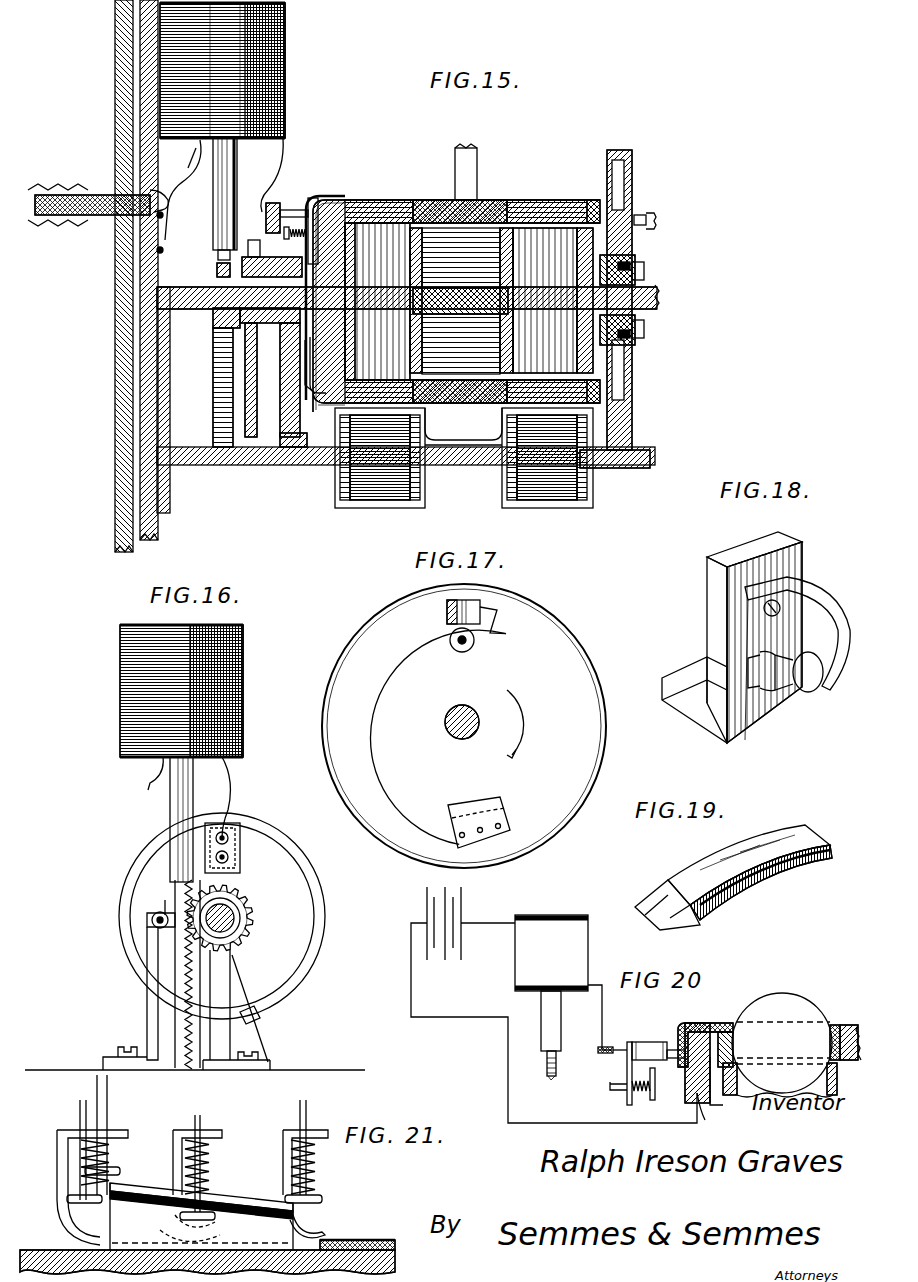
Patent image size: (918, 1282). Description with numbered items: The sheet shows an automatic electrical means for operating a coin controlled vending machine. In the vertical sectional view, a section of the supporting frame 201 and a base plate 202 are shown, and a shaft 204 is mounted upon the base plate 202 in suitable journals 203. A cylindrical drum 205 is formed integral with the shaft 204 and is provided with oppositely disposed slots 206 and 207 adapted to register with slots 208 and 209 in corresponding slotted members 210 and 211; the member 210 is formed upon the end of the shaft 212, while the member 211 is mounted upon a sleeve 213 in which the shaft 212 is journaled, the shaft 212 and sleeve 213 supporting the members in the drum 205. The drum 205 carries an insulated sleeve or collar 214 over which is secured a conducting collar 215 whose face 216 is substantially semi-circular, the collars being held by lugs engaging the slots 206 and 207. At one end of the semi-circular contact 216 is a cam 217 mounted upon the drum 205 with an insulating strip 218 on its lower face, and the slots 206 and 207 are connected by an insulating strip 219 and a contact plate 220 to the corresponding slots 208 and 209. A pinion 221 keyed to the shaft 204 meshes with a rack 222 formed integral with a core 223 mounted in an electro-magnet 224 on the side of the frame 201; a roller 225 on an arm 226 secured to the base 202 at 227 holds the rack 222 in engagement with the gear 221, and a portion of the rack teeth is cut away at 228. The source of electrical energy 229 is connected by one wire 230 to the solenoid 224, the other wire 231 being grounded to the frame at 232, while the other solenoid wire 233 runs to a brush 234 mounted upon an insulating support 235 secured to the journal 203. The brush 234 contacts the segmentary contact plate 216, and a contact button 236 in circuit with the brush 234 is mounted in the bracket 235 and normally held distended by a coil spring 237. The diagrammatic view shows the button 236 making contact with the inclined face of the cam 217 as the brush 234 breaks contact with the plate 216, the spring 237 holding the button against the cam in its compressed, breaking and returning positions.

In FIG. 15, the supporting frame 201 is at (135, 62).
In FIG. 15, the base plate 202 is at (225, 468).
In FIG. 16, the base plate 202 is at (45, 1068).
In FIG. 15, the journals 203 is at (305, 378).
In FIG. 16, the journals 203 is at (252, 1000).
In FIG. 15, the shaft 204 is at (190, 312).
In FIG. 16, the shaft 204 is at (232, 915).
In FIG. 17, the shaft 204 is at (458, 735).
In FIG. 15, the cylindrical drum 205 is at (378, 200).
In FIG. 16, the cylindrical drum 205 is at (300, 895).
In FIG. 17, the cylindrical drum 205 is at (565, 732).
In FIG. 21, the cylindrical drum 205 is at (45, 1250).
In FIG. 15, the slot 206 is at (395, 200).
In FIG. 20, the slot 206 is at (790, 1000).
In FIG. 15, the slot 207 is at (600, 200).
In FIG. 15, the slot 208 is at (400, 205).
In FIG. 15, the slot 209 is at (560, 205).
In FIG. 15, the slotted member 210 is at (418, 338).
In FIG. 20, the slotted member 210 is at (822, 1090).
In FIG. 15, the slotted member 211 is at (508, 348).
In FIG. 15, the shaft 212 is at (442, 314).
In FIG. 15, the sleeve 213 is at (548, 320).
In FIG. 20, the insulated sleeve 214 is at (735, 1040).
In FIG. 21, the insulated sleeve 214 is at (395, 1250).
In FIG. 15, the conducting collar 215 is at (322, 200).
In FIG. 16, the conducting collar 215 is at (318, 915).
In FIG. 20, the conducting collar 215 is at (718, 1020).
In FIG. 21, the conducting collar 215 is at (365, 1242).
In FIG. 15, the semi-circular contact 216 is at (310, 222).
In FIG. 16, the semi-circular contact 216 is at (150, 915).
In FIG. 17, the semi-circular contact 216 is at (365, 683).
In FIG. 20, the semi-circular contact 216 is at (690, 1023).
In FIG. 15, the cam 217 is at (370, 336).
In FIG. 16, the cam 217 is at (262, 975).
In FIG. 17, the cam 217 is at (498, 802).
In FIG. 19, the cam 217 is at (715, 855).
In FIG. 21, the cam 217 is at (228, 1193).
In FIG. 19, the insulating strip 218 is at (745, 895).
In FIG. 21, the insulating strip 218 is at (232, 1215).
In FIG. 15, the insulating strip 219 is at (352, 200).
In FIG. 20, the insulating strip 219 is at (845, 1030).
In FIG. 15, the contact plate 220 is at (480, 200).
In FIG. 20, the contact plate 220 is at (828, 1020).
In FIG. 15, the pinion 221 is at (217, 270).
In FIG. 16, the pinion 221 is at (258, 915).
In FIG. 15, the rack 222 is at (220, 372).
In FIG. 16, the rack 222 is at (182, 960).
In FIG. 15, the core 223 is at (218, 214).
In FIG. 16, the core 223 is at (172, 818).
In FIG. 20, the core 223 is at (546, 1003).
In FIG. 15, the electro-magnet 224 is at (285, 58).
In FIG. 16, the electro-magnet 224 is at (122, 680).
In FIG. 20, the electro-magnet 224 is at (585, 925).
In FIG. 16, the roller 225 is at (170, 905).
In FIG. 16, the arm 226 is at (147, 1003).
In FIG. 16, the arm securing point 227 is at (118, 1050).
In FIG. 15, the cut-away portion of rack teeth 228 is at (215, 405).
In FIG. 16, the cut-away portion of rack teeth 228 is at (228, 1032).
In FIG. 15, the source of electrical energy 229 is at (90, 232).
In FIG. 20, the source of electrical energy 229 is at (425, 900).
In FIG. 15, the wire 230 is at (185, 182).
In FIG. 16, the wire 230 is at (150, 780).
In FIG. 20, the wire 230 is at (498, 921).
In FIG. 15, the wire 231 is at (157, 232).
In FIG. 20, the wire 231 is at (507, 1069).
In FIG. 15, the ground connection 232 is at (157, 250).
In FIG. 20, the ground connection 232 is at (718, 1105).
In FIG. 15, the solenoid wire 233 is at (272, 186).
In FIG. 16, the solenoid wire 233 is at (230, 780).
In FIG. 20, the solenoid wire 233 is at (610, 1012).
In FIG. 15, the brush 234 is at (270, 203).
In FIG. 16, the brush 234 is at (226, 834).
In FIG. 17, the brush 234 is at (475, 612).
In FIG. 18, the brush 234 is at (800, 605).
In FIG. 20, the brush 234 is at (648, 1047).
In FIG. 21, the brush 234 is at (300, 1225).
In FIG. 15, the insulating support 235 is at (262, 226).
In FIG. 16, the insulating support 235 is at (240, 873).
In FIG. 18, the insulating support 235 is at (712, 605).
In FIG. 15, the contact button 236 is at (295, 240).
In FIG. 16, the contact button 236 is at (226, 855).
In FIG. 17, the contact button 236 is at (462, 645).
In FIG. 18, the contact button 236 is at (818, 692).
In FIG. 20, the contact button 236 is at (668, 1096).
In FIG. 21, the contact button 236 is at (318, 1197).
In FIG. 18, the coil spring 237 is at (785, 672).
In FIG. 21, the coil spring 237 is at (312, 1160).